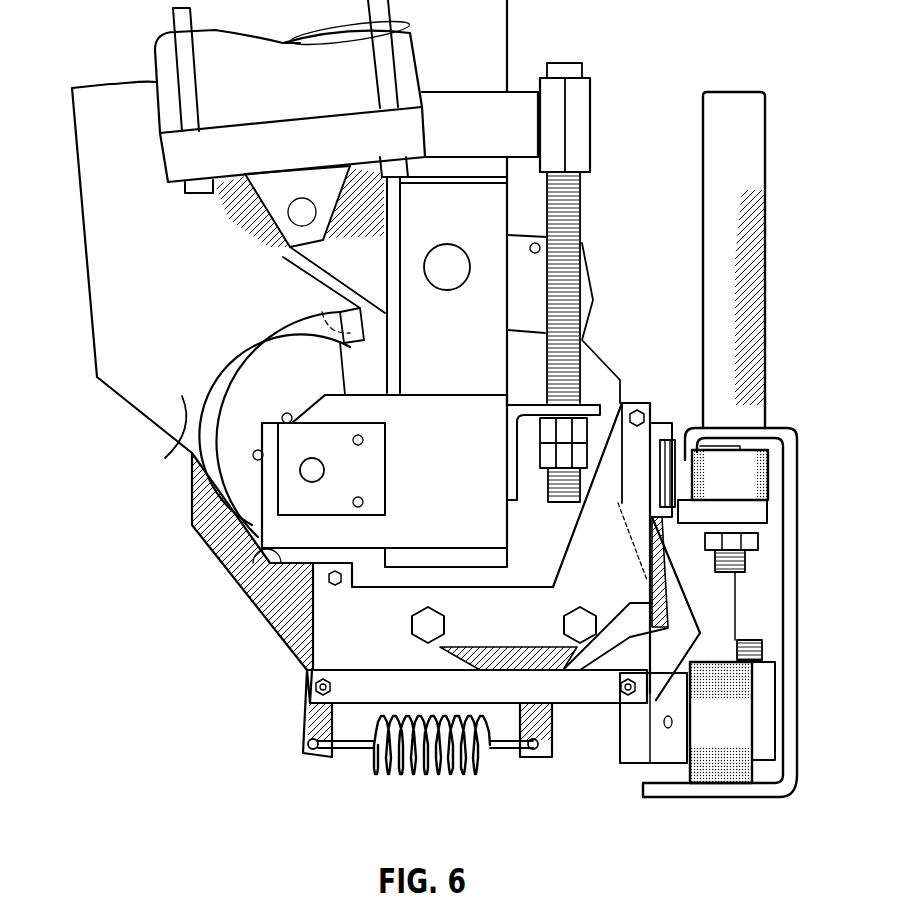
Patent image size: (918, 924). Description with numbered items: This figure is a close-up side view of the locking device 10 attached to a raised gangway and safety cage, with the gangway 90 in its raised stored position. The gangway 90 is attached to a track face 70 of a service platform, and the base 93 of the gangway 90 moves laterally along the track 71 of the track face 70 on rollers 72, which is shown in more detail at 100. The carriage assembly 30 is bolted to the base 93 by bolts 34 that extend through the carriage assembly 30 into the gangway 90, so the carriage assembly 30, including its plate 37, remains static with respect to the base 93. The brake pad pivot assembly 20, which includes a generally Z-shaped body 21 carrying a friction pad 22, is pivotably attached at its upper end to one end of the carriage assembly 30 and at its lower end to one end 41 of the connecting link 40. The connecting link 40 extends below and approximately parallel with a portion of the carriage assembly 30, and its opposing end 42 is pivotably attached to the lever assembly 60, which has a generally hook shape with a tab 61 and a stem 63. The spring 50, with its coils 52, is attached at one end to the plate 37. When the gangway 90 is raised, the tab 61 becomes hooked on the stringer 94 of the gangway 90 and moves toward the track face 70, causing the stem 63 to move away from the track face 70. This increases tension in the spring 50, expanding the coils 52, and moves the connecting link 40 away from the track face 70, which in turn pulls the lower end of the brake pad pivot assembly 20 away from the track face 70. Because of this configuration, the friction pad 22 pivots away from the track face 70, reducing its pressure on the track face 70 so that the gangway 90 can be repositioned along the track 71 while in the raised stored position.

The locking device 10 is at (247, 564).
The brake pad pivot assembly 20 is at (686, 544).
The body 21 is at (665, 590).
The friction pad 22 is at (673, 445).
The carriage assembly 30 is at (572, 578).
The bolts 34 is at (562, 626).
The plate 37 is at (550, 743).
The connecting link 40 is at (478, 704).
The end 41 is at (612, 690).
The opposing end 42 is at (362, 688).
The spring 50 is at (423, 770).
The coils 52 is at (399, 768).
The lever assembly 60 is at (235, 492).
The tab 61 is at (332, 326).
The stem 63 is at (308, 719).
The track face 70 is at (714, 615).
The track 71 is at (650, 782).
The rollers 72 is at (725, 787).
The gangway 90 is at (90, 302).
The base 93 is at (299, 612).
The stringer 94 is at (178, 420).
The detail region 100 is at (207, 637).